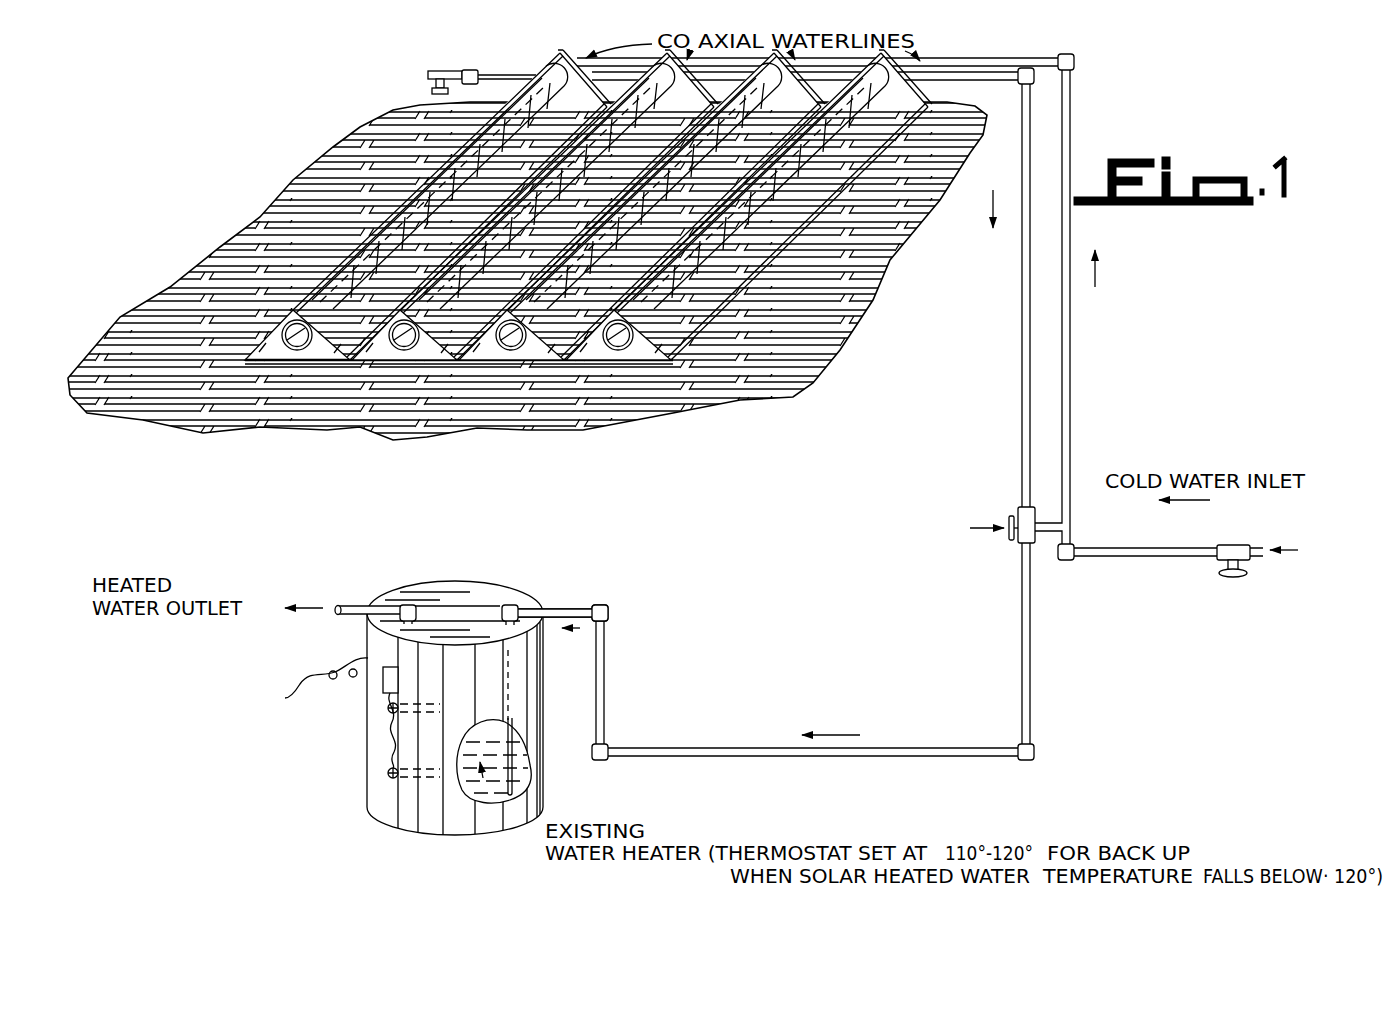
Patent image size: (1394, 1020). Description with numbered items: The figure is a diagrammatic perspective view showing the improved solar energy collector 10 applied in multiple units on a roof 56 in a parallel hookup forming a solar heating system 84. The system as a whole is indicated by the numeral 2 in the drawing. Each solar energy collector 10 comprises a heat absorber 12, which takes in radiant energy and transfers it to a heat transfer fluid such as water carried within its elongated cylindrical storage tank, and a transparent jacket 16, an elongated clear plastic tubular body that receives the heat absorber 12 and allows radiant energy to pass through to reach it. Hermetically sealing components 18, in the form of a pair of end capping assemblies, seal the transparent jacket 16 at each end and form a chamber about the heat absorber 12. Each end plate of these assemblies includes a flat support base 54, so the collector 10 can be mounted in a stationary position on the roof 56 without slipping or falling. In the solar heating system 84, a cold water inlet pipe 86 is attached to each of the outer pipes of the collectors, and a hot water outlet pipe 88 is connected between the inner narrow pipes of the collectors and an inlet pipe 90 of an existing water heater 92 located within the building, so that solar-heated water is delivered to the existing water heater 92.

The solar water heating system 2 is at (527, 271).
The solar energy collector 10 is at (607, 214).
The heat absorber 12 is at (293, 355).
The transparent jacket 16 is at (358, 248).
The hermetically sealing components 18 is at (459, 214).
The flat support base 54 is at (916, 116).
The roof 56 is at (197, 272).
The solar heating system 84 is at (1086, 409).
The cold water inlet pipe 86 is at (1153, 556).
The hot water outlet pipe 88 is at (1021, 430).
The inlet pipe 90 is at (577, 611).
The existing water heater 92 is at (366, 742).